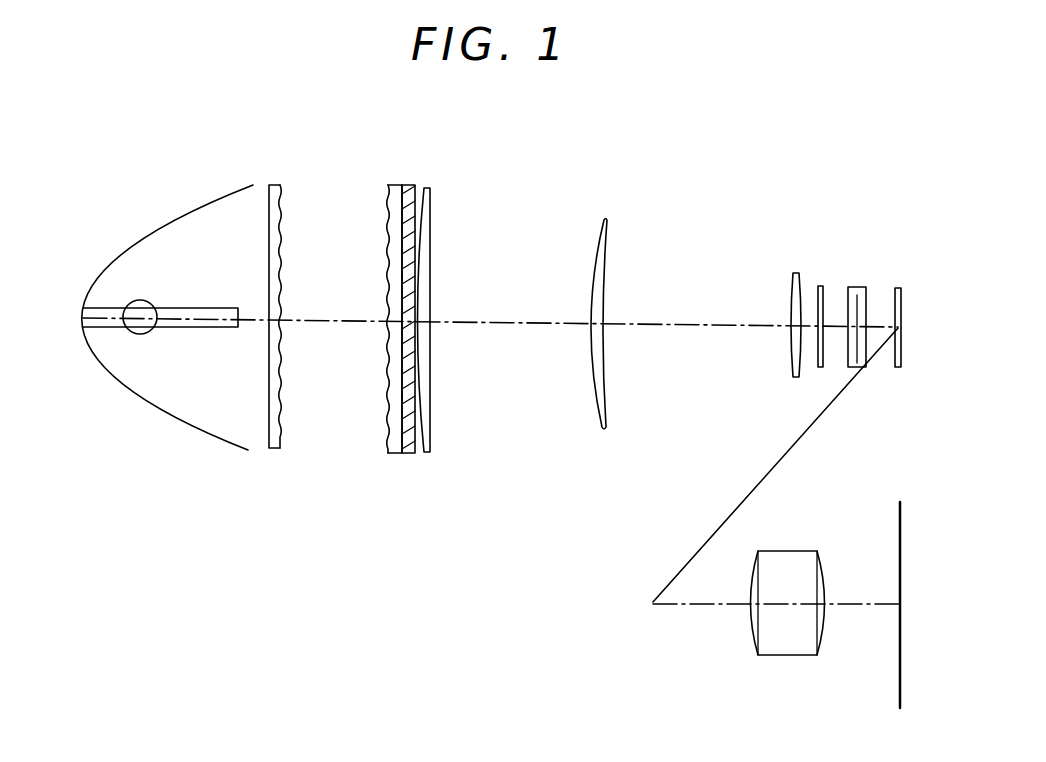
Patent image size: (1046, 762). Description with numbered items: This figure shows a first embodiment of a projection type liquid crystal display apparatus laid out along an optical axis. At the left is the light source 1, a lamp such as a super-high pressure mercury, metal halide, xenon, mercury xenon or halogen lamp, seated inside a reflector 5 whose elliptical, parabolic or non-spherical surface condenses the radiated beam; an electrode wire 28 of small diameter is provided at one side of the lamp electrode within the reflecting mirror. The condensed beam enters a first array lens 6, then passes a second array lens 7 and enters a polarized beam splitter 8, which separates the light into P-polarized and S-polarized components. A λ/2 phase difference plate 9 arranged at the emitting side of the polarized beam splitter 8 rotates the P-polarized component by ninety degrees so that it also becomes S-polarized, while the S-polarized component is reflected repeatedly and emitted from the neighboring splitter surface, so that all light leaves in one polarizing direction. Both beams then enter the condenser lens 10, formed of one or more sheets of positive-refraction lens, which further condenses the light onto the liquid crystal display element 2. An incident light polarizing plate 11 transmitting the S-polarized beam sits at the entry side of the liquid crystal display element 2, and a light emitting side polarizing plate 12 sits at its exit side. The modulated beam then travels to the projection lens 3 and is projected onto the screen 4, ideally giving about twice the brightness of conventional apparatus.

The light source 1 is at (137, 334).
The reflector 5 is at (177, 443).
The electrode wire 28 is at (238, 320).
The first array lens 6 is at (272, 449).
The second array lens 7 is at (394, 454).
The polarized beam splitter 8 is at (406, 455).
The λ/2 phase difference plate 9 is at (426, 454).
The condenser lens 10 is at (628, 178).
The incident light polarizing plate 11 is at (820, 285).
The liquid crystal display element 2 is at (857, 286).
The light emitting side polarizing plate 12 is at (898, 287).
The projection lens 3 is at (787, 656).
The screen 4 is at (899, 668).